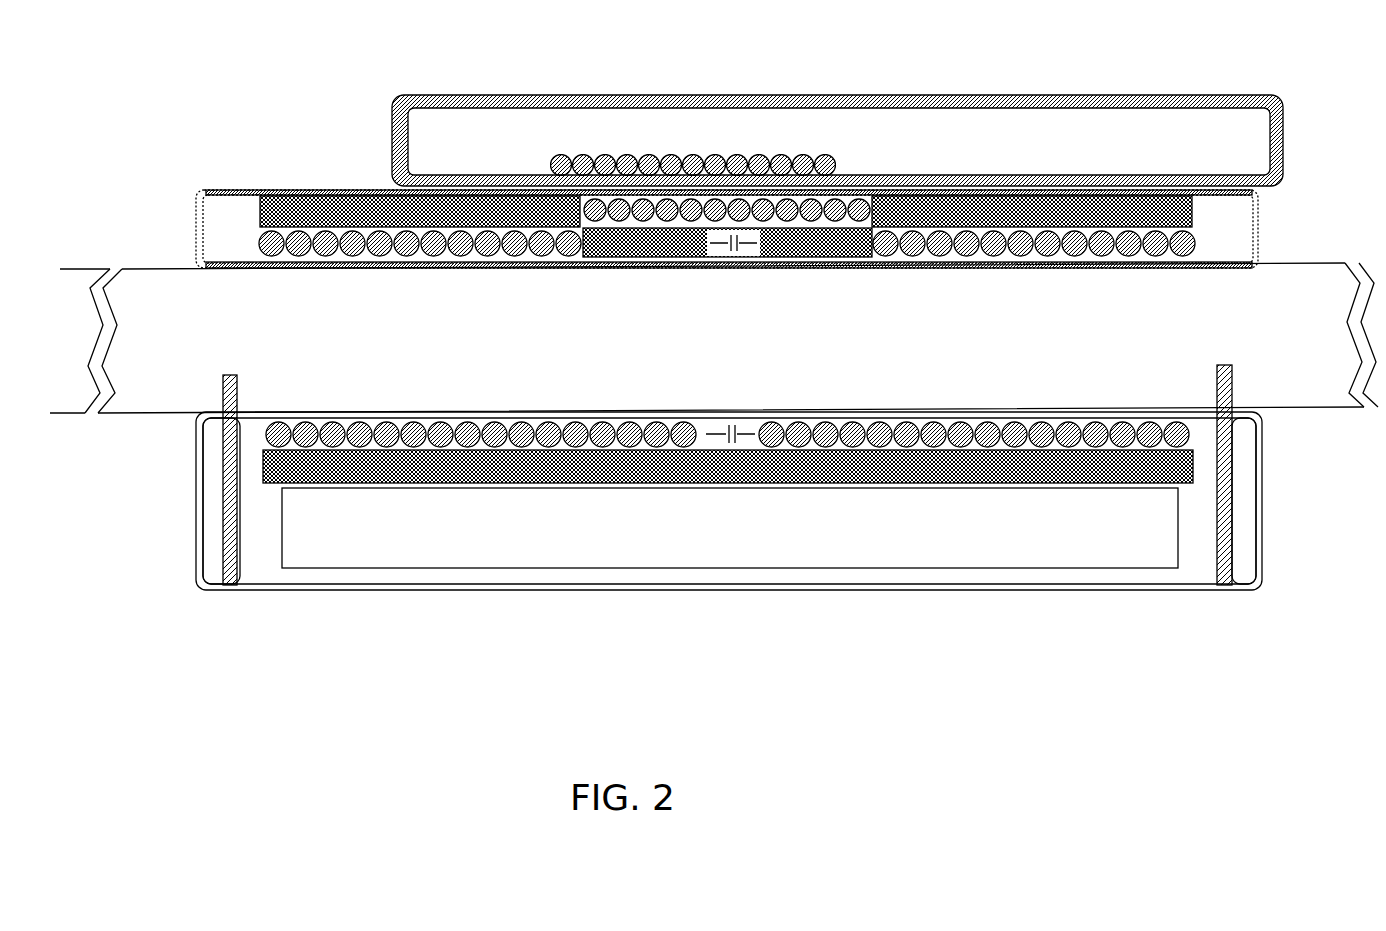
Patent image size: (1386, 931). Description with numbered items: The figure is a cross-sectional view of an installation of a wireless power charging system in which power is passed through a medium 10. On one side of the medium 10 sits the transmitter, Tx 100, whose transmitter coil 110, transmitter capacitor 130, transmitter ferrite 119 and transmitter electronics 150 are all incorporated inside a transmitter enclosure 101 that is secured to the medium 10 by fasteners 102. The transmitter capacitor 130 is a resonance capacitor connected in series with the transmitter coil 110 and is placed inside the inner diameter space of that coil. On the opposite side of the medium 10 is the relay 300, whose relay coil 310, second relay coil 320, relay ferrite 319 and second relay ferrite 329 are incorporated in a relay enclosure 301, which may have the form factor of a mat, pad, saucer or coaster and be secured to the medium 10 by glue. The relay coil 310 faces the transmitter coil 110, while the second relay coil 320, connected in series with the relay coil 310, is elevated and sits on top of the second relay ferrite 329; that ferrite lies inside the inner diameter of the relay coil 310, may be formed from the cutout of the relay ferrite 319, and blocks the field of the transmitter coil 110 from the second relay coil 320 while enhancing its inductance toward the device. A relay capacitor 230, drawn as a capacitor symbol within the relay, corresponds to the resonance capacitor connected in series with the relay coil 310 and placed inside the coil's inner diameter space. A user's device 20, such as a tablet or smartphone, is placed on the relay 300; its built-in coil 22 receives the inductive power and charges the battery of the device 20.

The device 20 is at (612, 97).
The built-in coil 22 is at (757, 145).
The relay 300 is at (192, 187).
The relay enclosure 301 is at (292, 188).
The relay ferrite 319 is at (358, 190).
The relay coil 310 is at (440, 268).
The second relay coil 320 is at (690, 268).
The second relay ferrite 329 is at (838, 268).
The repeater capacitor 230 is at (738, 258).
The medium 10 is at (122, 414).
The Tx 100 is at (195, 593).
The transmitter enclosure 101 is at (192, 528).
The fasteners 102 is at (246, 600).
The transmitter coil 110 is at (612, 412).
The transmitter capacitor 130 is at (755, 416).
The transmitter ferrite 119 is at (1200, 455).
The transmitter electronics 150 is at (496, 590).